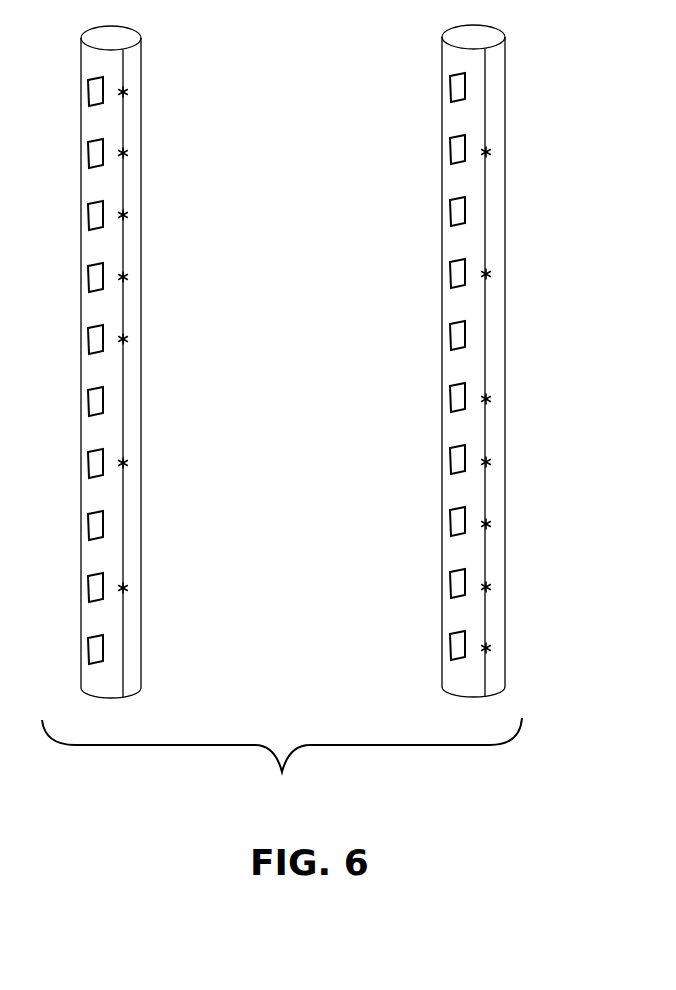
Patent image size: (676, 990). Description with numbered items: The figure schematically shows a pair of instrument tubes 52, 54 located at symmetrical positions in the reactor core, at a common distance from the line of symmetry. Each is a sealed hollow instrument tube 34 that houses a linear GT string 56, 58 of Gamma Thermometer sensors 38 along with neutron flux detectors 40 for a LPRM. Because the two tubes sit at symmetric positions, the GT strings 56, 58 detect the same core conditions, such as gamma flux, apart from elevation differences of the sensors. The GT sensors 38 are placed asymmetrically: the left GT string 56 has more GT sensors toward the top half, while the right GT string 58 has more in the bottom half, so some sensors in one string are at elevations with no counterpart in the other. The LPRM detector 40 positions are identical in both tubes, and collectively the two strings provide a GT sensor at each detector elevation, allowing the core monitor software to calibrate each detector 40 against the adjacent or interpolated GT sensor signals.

The instrument tube 34 is at (301, 361).
The Gamma Thermometer sensor 38 is at (490, 273).
The neutron flux detector 40 is at (89, 207).
The instrument tube 52 is at (156, 362).
The instrument tube 54 is at (518, 361).
The GT string 56 is at (123, 433).
The GT string 58 is at (489, 432).